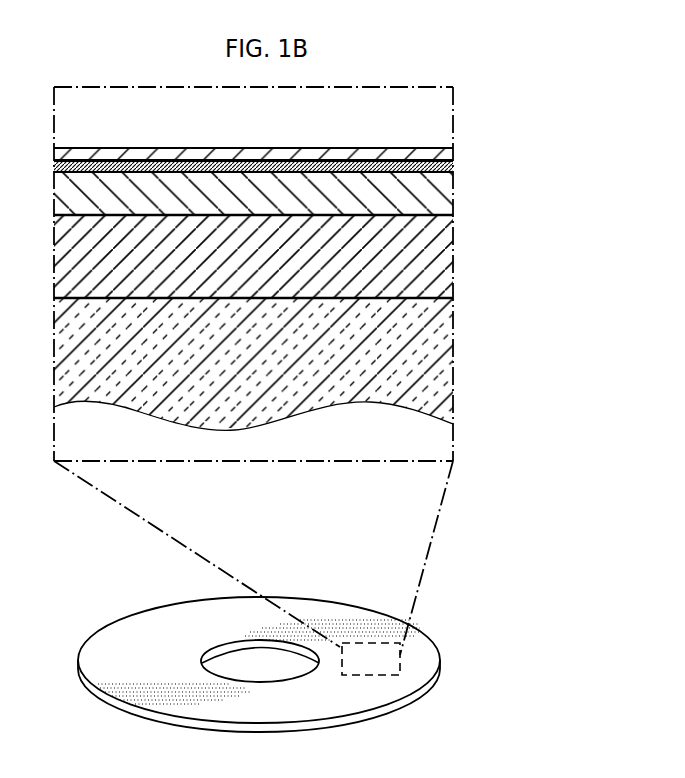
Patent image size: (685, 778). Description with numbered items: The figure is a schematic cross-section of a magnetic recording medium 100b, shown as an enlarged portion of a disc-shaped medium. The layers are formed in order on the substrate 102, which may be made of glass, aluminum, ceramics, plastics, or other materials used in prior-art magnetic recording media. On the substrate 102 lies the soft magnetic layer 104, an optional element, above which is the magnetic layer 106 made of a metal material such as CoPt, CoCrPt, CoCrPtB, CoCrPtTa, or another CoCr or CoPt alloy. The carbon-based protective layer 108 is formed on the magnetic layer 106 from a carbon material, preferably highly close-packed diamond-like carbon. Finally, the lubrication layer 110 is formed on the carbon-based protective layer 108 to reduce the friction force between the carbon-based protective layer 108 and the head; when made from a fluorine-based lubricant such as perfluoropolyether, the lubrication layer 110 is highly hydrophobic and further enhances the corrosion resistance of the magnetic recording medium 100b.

The magnetic recording medium 100b is at (560, 77).
The substrate 102 is at (450, 377).
The soft magnetic layer 104 is at (450, 262).
The magnetic layer 106 is at (450, 200).
The carbon-based protective layer 108 is at (450, 165).
The lubrication layer 110 is at (455, 148).